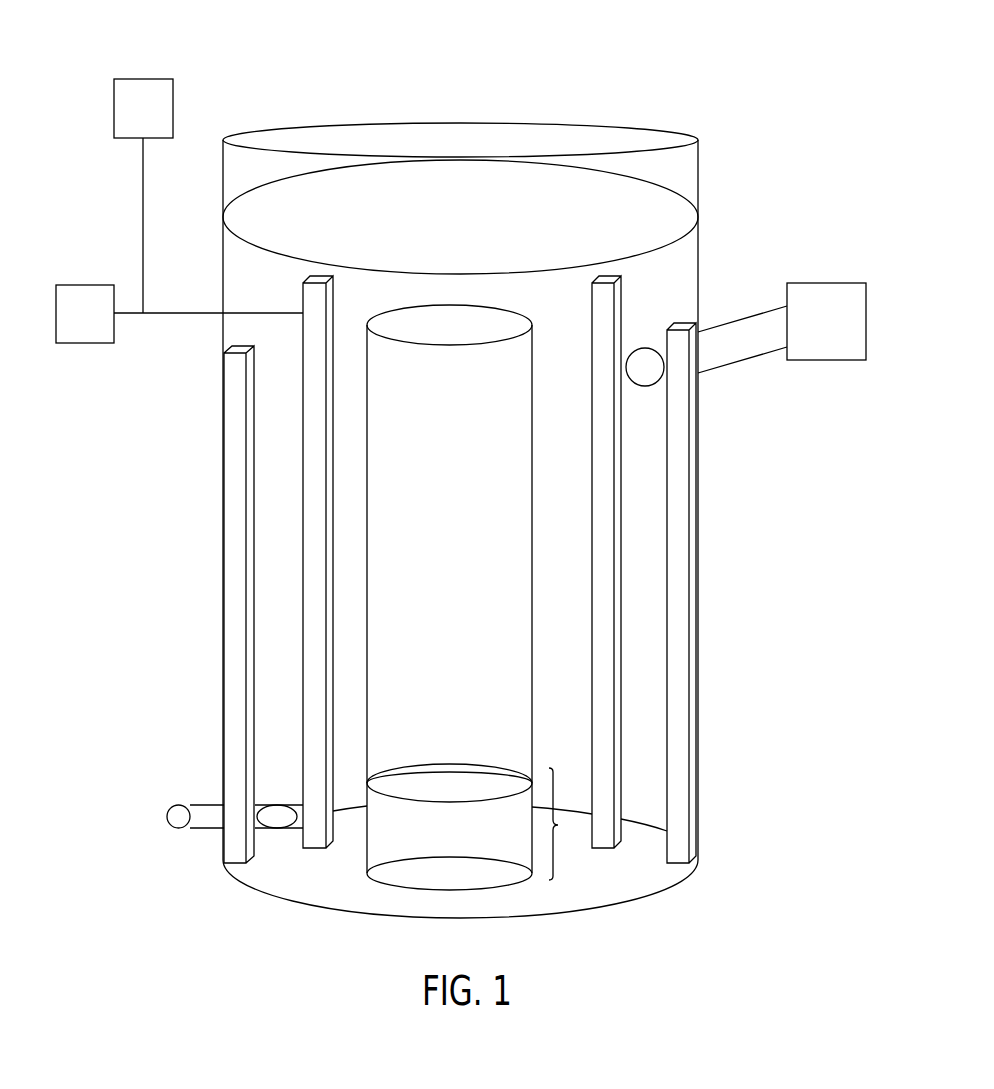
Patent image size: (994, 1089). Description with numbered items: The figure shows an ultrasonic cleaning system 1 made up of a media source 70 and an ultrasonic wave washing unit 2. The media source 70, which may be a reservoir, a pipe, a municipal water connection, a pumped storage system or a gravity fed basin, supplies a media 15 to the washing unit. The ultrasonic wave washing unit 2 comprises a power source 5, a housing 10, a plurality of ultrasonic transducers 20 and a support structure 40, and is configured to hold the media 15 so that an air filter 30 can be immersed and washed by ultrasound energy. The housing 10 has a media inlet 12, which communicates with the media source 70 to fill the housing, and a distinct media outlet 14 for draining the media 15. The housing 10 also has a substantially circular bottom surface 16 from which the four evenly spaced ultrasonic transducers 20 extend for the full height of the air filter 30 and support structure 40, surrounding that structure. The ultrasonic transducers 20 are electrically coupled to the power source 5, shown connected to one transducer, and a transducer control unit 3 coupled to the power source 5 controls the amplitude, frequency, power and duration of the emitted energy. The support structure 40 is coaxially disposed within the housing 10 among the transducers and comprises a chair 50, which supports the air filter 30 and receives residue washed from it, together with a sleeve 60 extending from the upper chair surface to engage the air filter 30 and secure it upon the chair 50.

The ultrasonic cleaning system 1 is at (481, 48).
The ultrasonic wave washing unit 2 is at (708, 176).
The transducer control unit 3 is at (143, 79).
The power source 5 is at (86, 285).
The housing 10 is at (223, 189).
The media inlet 12 is at (731, 350).
The media outlet 14 is at (199, 814).
The media 15 is at (643, 622).
The bottom surface 16 is at (388, 896).
The ultrasonic transducers 20 is at (303, 292).
The air filter 30 is at (418, 597).
The support structure 40 is at (405, 848).
The chair 50 is at (378, 845).
The sleeve 60 is at (372, 796).
The media source 70 is at (826, 283).